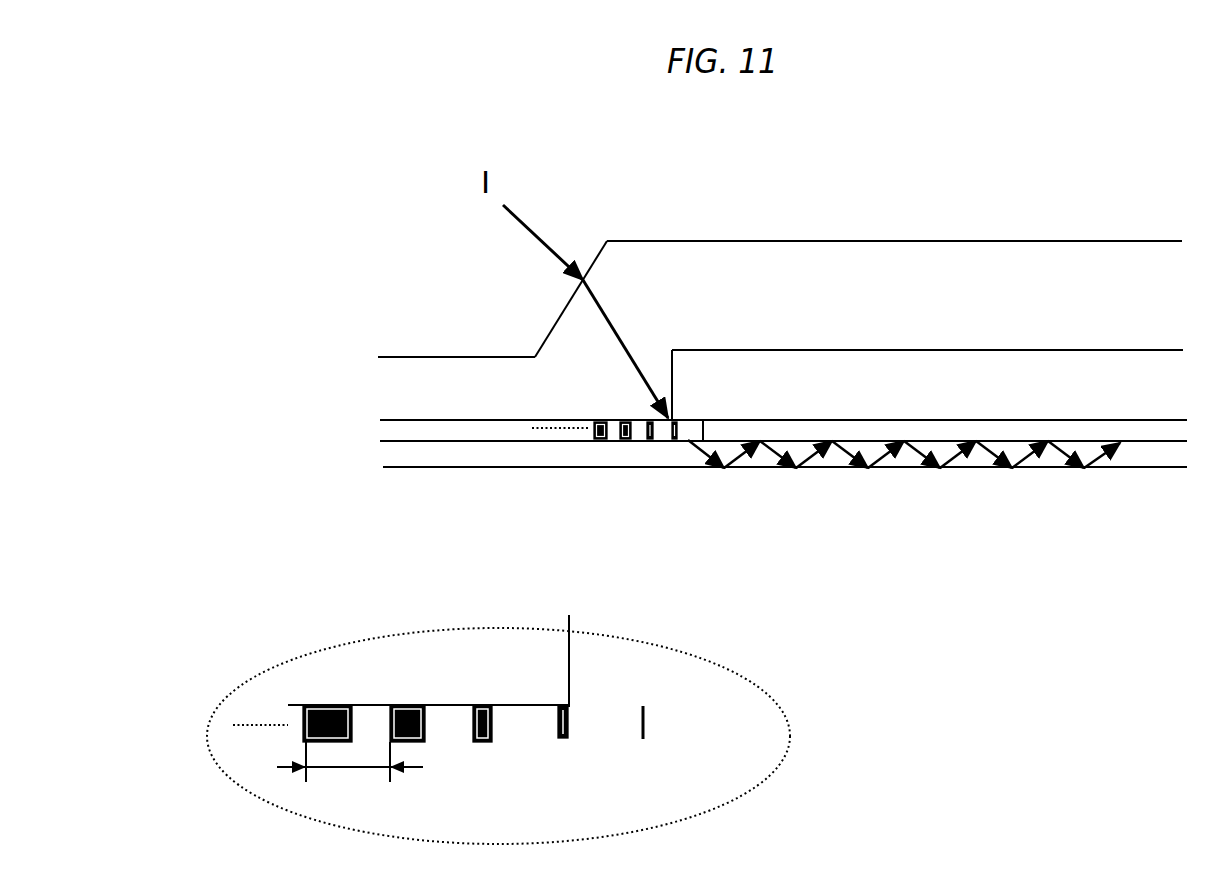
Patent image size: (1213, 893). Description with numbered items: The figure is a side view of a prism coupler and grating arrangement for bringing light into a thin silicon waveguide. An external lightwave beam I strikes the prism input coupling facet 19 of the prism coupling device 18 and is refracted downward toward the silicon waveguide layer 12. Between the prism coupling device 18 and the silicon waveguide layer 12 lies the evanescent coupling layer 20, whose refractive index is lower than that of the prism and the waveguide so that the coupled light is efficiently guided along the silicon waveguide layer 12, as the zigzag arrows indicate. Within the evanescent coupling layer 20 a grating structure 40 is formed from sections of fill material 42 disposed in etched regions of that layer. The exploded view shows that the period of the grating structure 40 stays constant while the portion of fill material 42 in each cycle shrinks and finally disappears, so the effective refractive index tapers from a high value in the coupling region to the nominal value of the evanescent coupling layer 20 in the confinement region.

The silicon waveguide layer 12 is at (373, 455).
The prism coupling device 18 is at (720, 240).
The prism input coupling facet 19 is at (597, 260).
The evanescent coupling layer 20 is at (380, 435).
The grating structure 40 is at (496, 607).
The fill material 42 is at (605, 418).